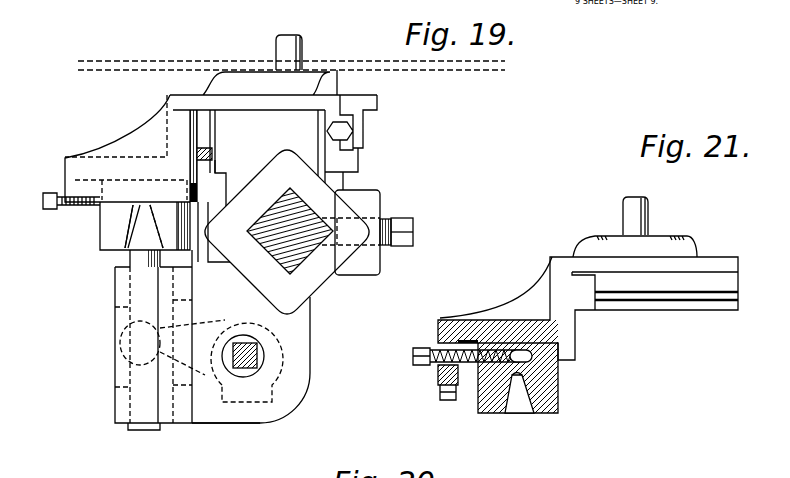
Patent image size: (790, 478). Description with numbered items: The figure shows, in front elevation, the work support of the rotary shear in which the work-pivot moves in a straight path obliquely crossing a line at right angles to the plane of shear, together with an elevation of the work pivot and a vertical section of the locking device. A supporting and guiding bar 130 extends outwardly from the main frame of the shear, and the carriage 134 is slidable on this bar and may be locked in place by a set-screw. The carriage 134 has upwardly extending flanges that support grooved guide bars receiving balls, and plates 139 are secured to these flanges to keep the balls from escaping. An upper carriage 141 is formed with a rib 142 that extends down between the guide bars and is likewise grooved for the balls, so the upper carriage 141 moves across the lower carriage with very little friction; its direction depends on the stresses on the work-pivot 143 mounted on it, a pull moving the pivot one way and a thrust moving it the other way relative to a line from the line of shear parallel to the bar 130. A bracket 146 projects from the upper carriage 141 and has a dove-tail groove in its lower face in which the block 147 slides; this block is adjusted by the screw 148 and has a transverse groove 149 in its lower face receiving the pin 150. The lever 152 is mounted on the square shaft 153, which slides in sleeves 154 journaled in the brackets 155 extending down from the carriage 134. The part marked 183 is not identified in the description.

In FIG. 19, the supporting and guiding bar 130 is at (293, 198).
In FIG. 19, the carriage 134 is at (292, 232).
In FIG. 19, the plates 139 is at (237, 157).
In FIG. 19, the upper carriage 141 is at (273, 90).
In FIG. 19, the rib 142 is at (358, 120).
In FIG. 19, the work-pivot 143 is at (290, 48).
In FIG. 21, the work-pivot 143 is at (640, 220).
In FIG. 19, the bracket 146 is at (125, 130).
In FIG. 21, the bracket 146 is at (504, 330).
In FIG. 19, the block 147 is at (145, 226).
In FIG. 21, the block 147 is at (548, 376).
In FIG. 19, the screw 148 is at (56, 212).
In FIG. 21, the screw 148 is at (425, 348).
In FIG. 19, the transverse groove 149 is at (128, 240).
In FIG. 21, the transverse groove 149 is at (517, 397).
In FIG. 19, the pin 150 is at (140, 258).
In FIG. 19, the lever 152 is at (205, 375).
In FIG. 19, the square shaft 153 is at (258, 357).
In FIG. 19, the sleeves 154 is at (262, 352).
In FIG. 19, the brackets 155 is at (285, 386).
In FIG. 19, the bolt 183 is at (405, 227).